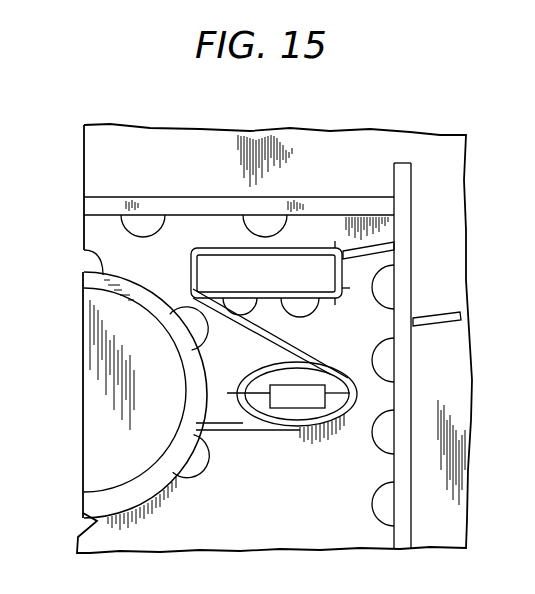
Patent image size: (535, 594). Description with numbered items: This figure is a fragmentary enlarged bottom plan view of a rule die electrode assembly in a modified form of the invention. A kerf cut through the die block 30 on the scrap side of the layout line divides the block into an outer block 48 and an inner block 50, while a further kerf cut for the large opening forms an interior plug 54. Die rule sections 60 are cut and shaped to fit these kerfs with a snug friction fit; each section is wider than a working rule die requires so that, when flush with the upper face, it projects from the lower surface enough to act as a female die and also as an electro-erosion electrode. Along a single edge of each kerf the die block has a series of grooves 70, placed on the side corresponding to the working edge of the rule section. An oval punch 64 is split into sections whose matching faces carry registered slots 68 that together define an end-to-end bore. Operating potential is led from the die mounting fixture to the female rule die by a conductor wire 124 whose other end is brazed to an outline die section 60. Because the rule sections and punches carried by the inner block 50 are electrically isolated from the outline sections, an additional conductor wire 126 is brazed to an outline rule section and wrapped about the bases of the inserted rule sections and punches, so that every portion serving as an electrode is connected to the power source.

The die block 30 is at (486, 398).
The outer block 48 is at (152, 140).
The inner block 50 is at (100, 233).
The interior plug 54 is at (92, 407).
The die rule section 60 is at (320, 200).
The oval punch 64 is at (333, 409).
The registered slots 68 is at (288, 404).
The grooves 70 is at (204, 338).
The conductor wire 124 is at (443, 316).
The additional conductor wire 126 is at (290, 343).